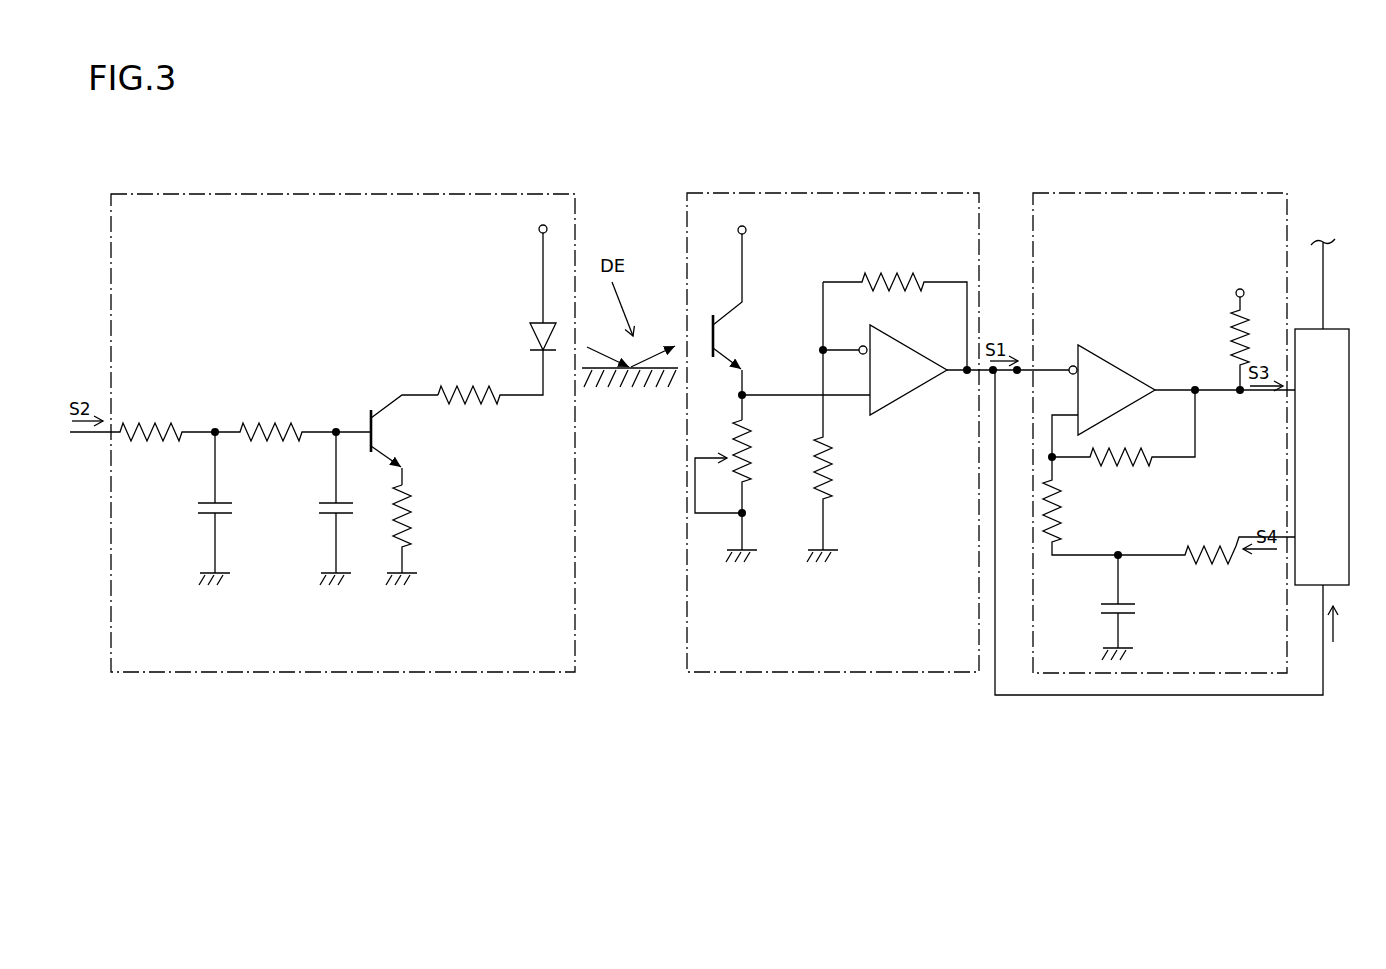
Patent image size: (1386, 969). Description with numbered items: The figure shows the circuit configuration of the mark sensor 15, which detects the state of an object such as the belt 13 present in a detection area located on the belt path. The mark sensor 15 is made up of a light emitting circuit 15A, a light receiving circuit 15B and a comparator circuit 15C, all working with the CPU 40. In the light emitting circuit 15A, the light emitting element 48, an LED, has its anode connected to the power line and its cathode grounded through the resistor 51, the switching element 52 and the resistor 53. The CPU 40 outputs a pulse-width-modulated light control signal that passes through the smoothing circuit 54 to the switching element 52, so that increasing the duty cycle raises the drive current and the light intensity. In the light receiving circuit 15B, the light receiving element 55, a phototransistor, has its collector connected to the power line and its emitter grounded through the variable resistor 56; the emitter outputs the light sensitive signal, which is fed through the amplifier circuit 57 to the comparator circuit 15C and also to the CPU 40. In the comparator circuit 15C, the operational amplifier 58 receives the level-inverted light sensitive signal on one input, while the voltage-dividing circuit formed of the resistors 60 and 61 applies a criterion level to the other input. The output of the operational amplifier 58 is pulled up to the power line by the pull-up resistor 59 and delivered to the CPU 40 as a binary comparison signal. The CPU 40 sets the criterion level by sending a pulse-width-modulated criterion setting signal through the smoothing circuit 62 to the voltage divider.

The belt 13 is at (633, 376).
The mark sensor 15 is at (786, 117).
The light emitting circuit 15A is at (393, 194).
The light receiving circuit 15B is at (905, 193).
The comparator circuit 15C is at (1147, 193).
The CPU 40 is at (1336, 330).
The light emitting element 48 is at (527, 333).
The resistor 51 is at (471, 405).
The switching element 52 is at (384, 412).
The resistor 53 is at (408, 527).
The smoothing circuit 54 is at (185, 471).
The light receiving element 55 is at (718, 338).
The variable resistor 56 is at (750, 463).
The amplifier circuit 57 is at (921, 410).
The operational amplifier 58 is at (1112, 378).
The pull-up resistor 59 is at (1230, 333).
The resistor 60 is at (1123, 462).
The resistor 61 is at (1065, 514).
The smoothing circuit 62 is at (1154, 572).